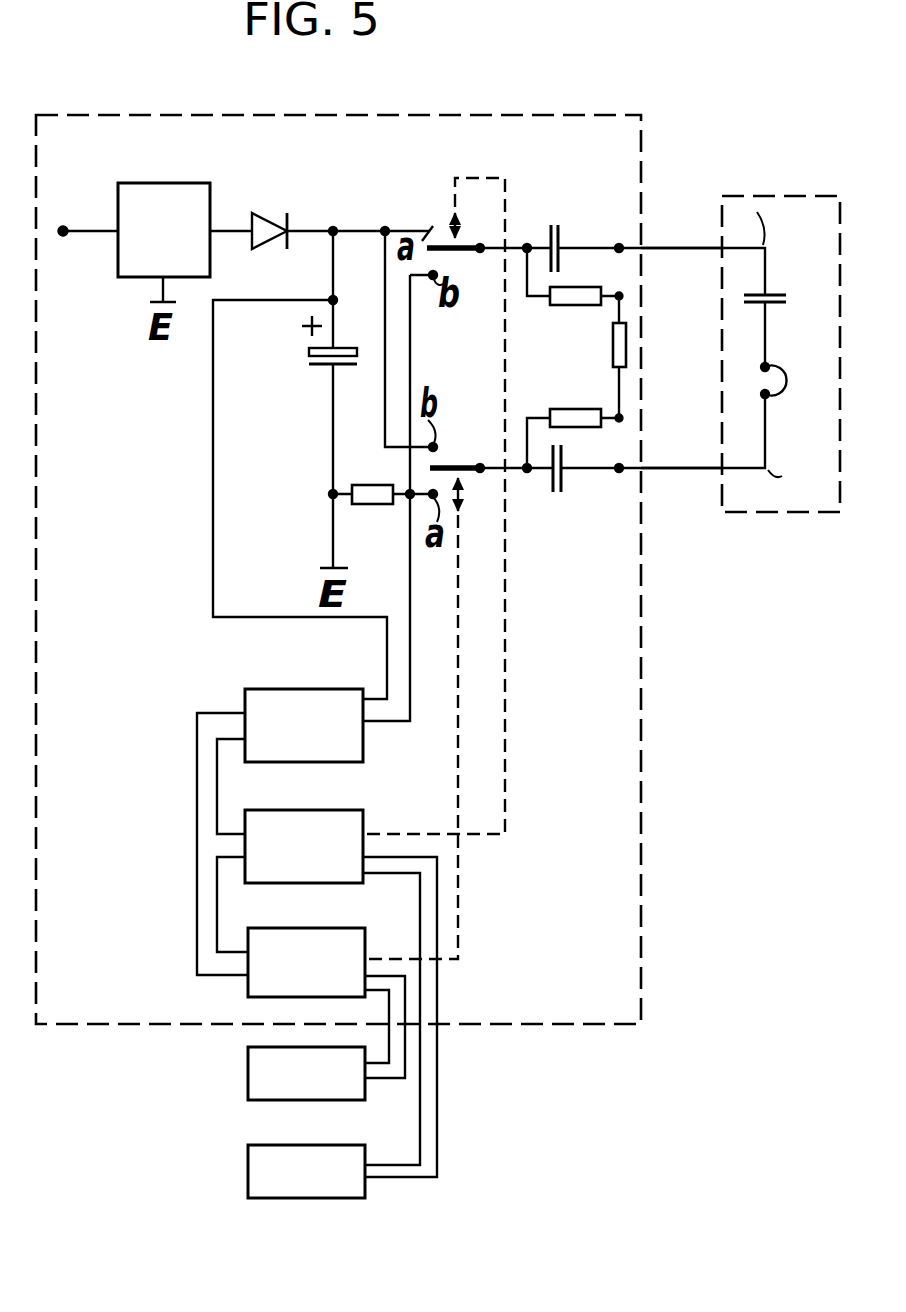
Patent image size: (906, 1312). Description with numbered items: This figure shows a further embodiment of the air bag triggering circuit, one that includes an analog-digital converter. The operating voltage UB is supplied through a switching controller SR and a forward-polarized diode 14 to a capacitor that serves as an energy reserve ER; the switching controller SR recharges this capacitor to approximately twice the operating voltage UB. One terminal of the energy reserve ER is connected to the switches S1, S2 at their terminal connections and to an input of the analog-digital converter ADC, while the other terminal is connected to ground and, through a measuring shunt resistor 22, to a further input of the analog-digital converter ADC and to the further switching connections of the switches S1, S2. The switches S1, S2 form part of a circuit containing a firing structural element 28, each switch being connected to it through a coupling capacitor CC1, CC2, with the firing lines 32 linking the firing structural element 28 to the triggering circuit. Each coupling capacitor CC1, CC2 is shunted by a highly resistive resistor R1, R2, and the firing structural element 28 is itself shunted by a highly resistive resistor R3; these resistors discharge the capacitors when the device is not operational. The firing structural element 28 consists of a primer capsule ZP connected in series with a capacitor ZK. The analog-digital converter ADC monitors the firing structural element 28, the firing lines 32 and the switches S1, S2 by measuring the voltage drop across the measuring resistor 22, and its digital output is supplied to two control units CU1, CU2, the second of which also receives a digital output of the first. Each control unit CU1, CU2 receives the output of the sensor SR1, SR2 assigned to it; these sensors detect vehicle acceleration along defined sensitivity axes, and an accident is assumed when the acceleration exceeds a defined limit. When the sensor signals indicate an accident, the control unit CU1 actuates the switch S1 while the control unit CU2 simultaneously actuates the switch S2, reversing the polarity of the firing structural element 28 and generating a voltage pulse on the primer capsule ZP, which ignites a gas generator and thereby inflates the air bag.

The diode 14 is at (278, 212).
The measuring shunt resistor 22 is at (366, 510).
The firing structural element 28 is at (760, 520).
The firing lines 32 is at (657, 248).
The operating voltage UB is at (72, 207).
The switching controller SR is at (138, 183).
The energy reserve ER is at (307, 354).
The switch S1 is at (443, 212).
The switch S2 is at (452, 460).
The coupling capacitor CC1 is at (549, 236).
The coupling capacitor CC2 is at (575, 478).
The highly resistive resistor R1 is at (567, 307).
The highly resistive resistor R2 is at (575, 410).
The highly resistive resistor R3 is at (617, 350).
The capacitor ZK is at (797, 280).
The primer capsule ZP is at (792, 386).
The analog-digital converter ADC is at (304, 725).
The control unit CU1 is at (304, 846).
The control unit CU2 is at (306, 962).
The sensor SR1 is at (306, 1171).
The sensor SR2 is at (306, 1073).